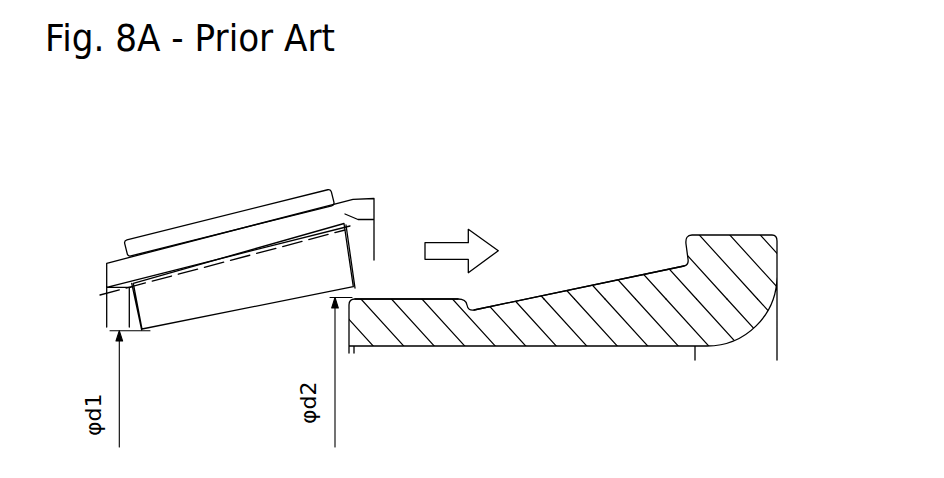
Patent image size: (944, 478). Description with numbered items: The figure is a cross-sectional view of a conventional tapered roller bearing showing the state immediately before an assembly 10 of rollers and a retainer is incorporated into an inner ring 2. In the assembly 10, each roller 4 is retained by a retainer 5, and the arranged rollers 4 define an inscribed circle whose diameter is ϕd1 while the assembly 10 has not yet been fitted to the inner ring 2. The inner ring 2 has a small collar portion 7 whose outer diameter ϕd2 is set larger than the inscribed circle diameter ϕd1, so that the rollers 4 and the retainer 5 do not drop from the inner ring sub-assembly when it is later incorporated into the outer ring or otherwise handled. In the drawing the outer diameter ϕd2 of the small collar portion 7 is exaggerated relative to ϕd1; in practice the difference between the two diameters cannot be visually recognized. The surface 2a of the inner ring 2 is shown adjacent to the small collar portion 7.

The assembly of the rollers and the retainer 10 is at (237, 207).
The roller 4 is at (188, 230).
The retainer 5 is at (257, 240).
The small collar portion 7 is at (408, 307).
The inner ring 2 is at (736, 318).
The tapered guide surface 2a is at (584, 286).